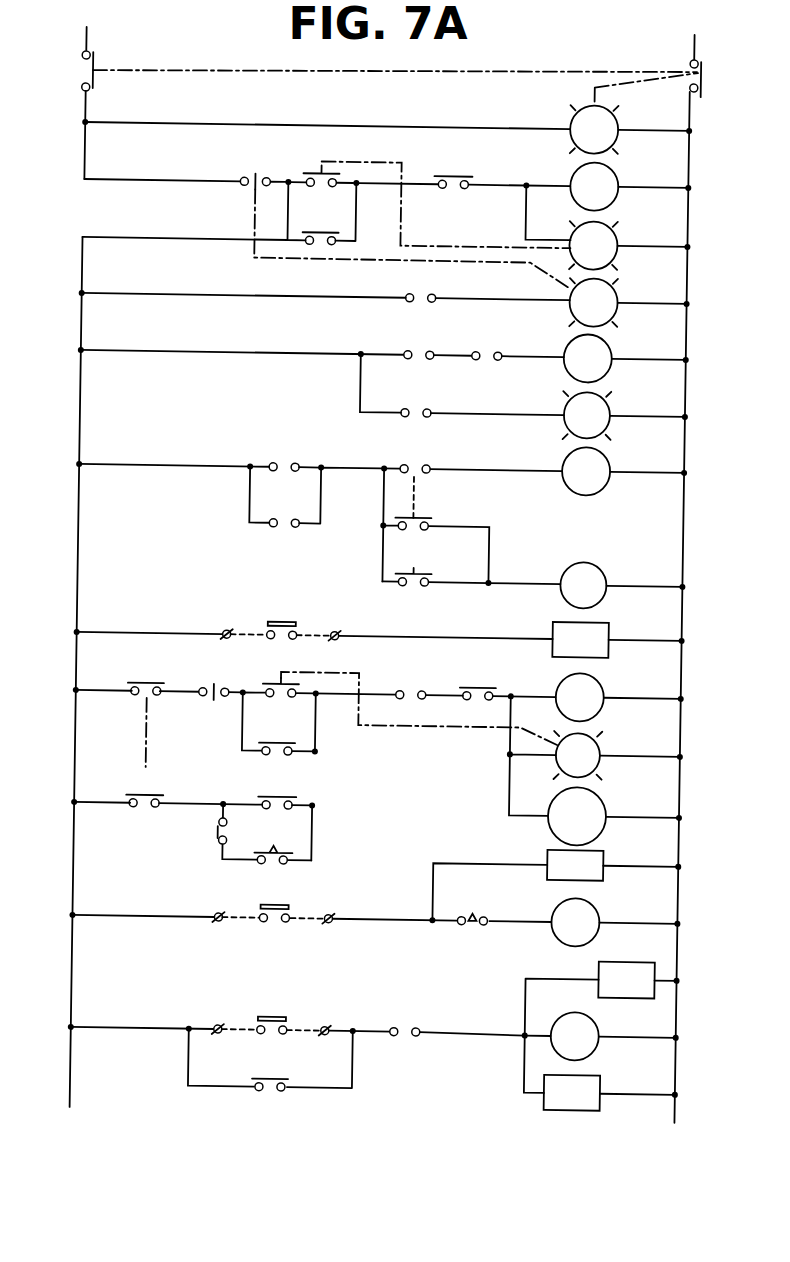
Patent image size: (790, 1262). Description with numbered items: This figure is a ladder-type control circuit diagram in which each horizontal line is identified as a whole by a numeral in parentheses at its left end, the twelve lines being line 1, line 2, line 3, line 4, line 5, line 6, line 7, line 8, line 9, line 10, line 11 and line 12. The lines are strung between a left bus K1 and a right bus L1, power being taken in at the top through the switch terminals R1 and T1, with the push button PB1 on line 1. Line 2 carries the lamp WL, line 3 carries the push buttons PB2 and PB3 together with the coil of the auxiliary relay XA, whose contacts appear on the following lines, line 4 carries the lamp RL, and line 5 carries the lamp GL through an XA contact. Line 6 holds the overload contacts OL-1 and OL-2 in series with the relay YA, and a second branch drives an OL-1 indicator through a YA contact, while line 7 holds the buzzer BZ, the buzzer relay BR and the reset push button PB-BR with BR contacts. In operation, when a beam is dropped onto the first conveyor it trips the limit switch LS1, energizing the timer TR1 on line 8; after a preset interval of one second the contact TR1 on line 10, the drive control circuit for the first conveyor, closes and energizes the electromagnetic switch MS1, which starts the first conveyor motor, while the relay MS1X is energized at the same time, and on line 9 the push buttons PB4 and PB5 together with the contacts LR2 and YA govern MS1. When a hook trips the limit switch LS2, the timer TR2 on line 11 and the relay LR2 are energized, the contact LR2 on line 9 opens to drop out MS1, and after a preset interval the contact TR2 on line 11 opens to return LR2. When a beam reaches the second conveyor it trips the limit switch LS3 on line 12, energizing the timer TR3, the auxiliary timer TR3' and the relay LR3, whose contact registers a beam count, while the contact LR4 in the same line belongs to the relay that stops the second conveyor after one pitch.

The line 1 is at (371, 74).
The line 2 is at (368, 126).
The line 3 is at (367, 183).
The line 4 is at (366, 219).
The line 5 is at (365, 297).
The line 6 is at (364, 377).
The line 7 is at (362, 489).
The line 8 is at (360, 636).
The line 9 is at (359, 717).
The line 10 is at (166, 823).
The line 11 is at (349, 919).
The line 12 is at (347, 1052).
The power supply terminal R1 switch R1 is at (102, 50).
The power supply terminal T1 switch T1 is at (684, 64).
The left supply bus K1 is at (93, 606).
The right supply bus L1 is at (664, 612).
The push button PB1 is at (415, 75).
The push button PB2 is at (404, 217).
The push button PB3 is at (430, 192).
The push button PB4 is at (210, 680).
The push button PB5 is at (409, 697).
The buzzer reset push button PB-BR is at (435, 564).
The white lamp WL is at (594, 129).
The auxiliary relay XA and its contacts XA is at (372, 485).
The relay YA and its contacts YA is at (440, 425).
The red lamp RL is at (586, 500).
The green lamp GL is at (593, 302).
The overload relay 1 contact and lamp OL-1 is at (505, 384).
The overload relay 2 contact OL-2 is at (483, 345).
The buzzer BZ is at (586, 471).
The buzzer relay and its contacts BR is at (533, 525).
The limit switch LS1 is at (281, 617).
The limit switch LS2 is at (273, 902).
The limit switch LS3 is at (272, 1013).
The timer TR1 is at (413, 743).
The timer TR2 is at (556, 888).
The timer TR3 is at (601, 1074).
The timer relay TR3' is at (602, 999).
The electromagnetic switch MS1 is at (429, 741).
The relay MS1X is at (595, 771).
The relay LR2 is at (494, 806).
The relay LR3 is at (424, 1052).
The relay LR4 is at (404, 1019).